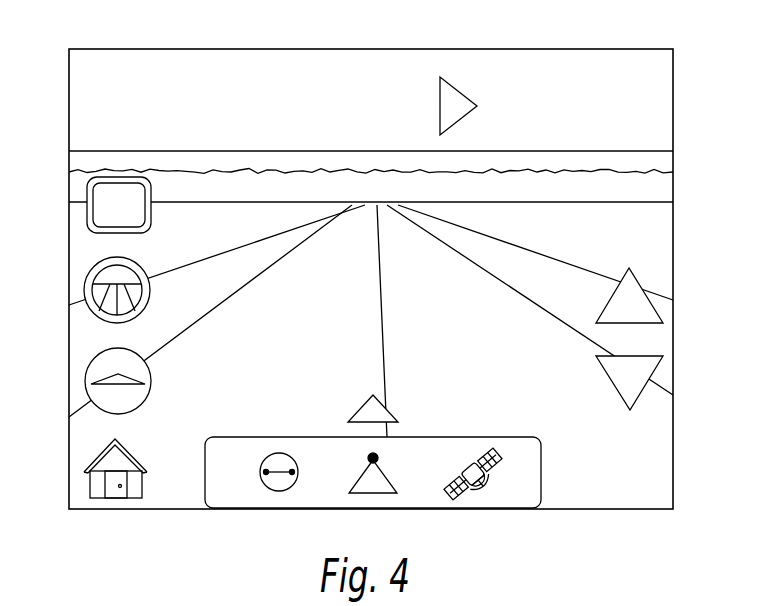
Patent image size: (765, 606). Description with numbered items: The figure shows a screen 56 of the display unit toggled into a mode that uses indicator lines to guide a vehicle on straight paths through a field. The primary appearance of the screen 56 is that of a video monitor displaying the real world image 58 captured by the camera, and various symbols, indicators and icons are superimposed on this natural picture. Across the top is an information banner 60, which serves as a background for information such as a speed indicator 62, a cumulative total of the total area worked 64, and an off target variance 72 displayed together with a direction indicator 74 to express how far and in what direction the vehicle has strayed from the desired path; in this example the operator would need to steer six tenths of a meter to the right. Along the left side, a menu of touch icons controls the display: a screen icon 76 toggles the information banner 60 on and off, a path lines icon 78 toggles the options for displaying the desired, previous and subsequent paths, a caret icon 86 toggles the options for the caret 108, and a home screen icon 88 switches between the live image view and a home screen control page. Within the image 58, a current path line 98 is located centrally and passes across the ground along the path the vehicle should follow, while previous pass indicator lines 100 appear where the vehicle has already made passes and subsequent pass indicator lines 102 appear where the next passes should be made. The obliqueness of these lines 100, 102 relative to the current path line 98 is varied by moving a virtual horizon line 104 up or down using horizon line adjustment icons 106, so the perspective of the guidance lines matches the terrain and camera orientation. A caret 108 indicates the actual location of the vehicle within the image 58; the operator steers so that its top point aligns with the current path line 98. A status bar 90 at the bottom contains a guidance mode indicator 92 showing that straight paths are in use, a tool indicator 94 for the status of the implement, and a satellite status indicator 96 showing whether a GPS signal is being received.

The screen 56 is at (673, 248).
The real world image 58 is at (653, 219).
The information banner 60 is at (237, 67).
The speed indicator 62 is at (87, 80).
The total area worked 64 is at (652, 77).
The off target variance 72 is at (370, 95).
The direction indicator 74 is at (465, 100).
The screen icon 76 is at (87, 190).
The path lines icon 78 is at (85, 287).
The caret icon 86 is at (85, 377).
The home screen icon 88 is at (90, 480).
The status bar 90 is at (322, 498).
The guidance mode indicator 92 is at (275, 453).
The tool indicator 94 is at (390, 496).
The satellite status indicator 96 is at (480, 465).
The current path line 98 is at (384, 321).
The previous pass indicator lines 100 is at (237, 243).
The subsequent pass indicator lines 102 is at (510, 245).
The virtual horizon line 104 is at (634, 200).
The horizon line adjustment icons 106 is at (645, 284).
The caret 108 is at (363, 405).